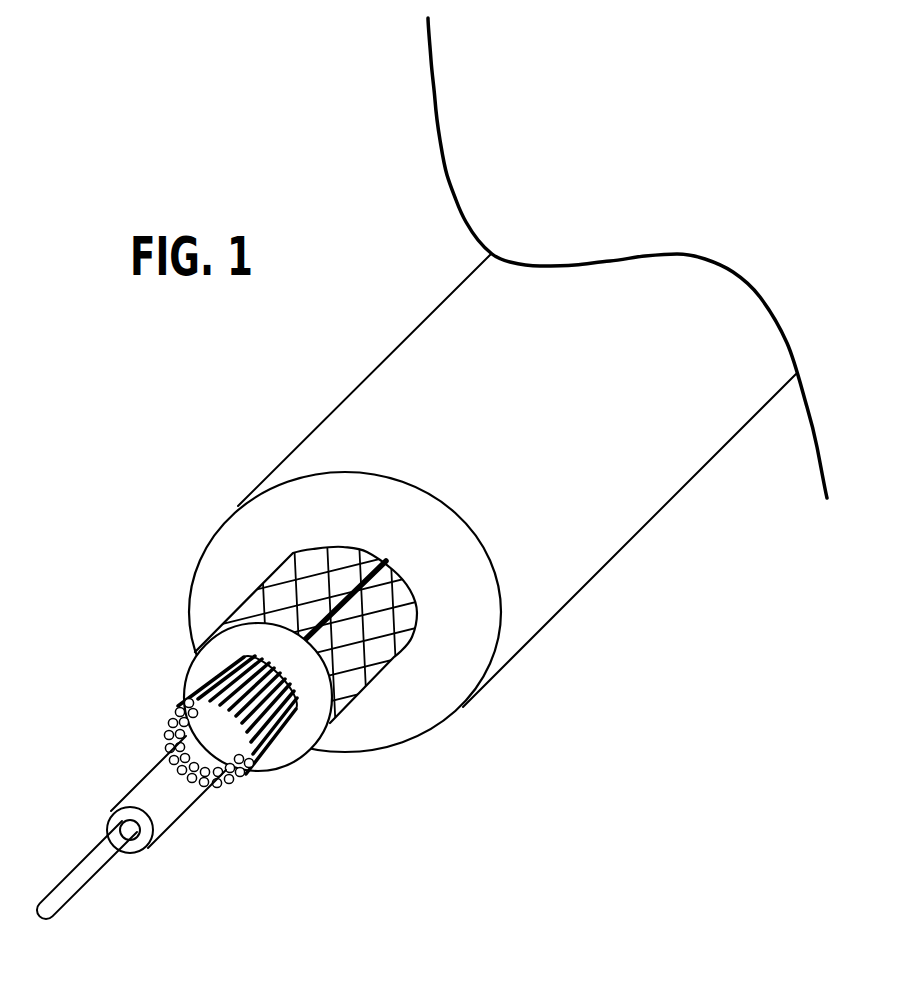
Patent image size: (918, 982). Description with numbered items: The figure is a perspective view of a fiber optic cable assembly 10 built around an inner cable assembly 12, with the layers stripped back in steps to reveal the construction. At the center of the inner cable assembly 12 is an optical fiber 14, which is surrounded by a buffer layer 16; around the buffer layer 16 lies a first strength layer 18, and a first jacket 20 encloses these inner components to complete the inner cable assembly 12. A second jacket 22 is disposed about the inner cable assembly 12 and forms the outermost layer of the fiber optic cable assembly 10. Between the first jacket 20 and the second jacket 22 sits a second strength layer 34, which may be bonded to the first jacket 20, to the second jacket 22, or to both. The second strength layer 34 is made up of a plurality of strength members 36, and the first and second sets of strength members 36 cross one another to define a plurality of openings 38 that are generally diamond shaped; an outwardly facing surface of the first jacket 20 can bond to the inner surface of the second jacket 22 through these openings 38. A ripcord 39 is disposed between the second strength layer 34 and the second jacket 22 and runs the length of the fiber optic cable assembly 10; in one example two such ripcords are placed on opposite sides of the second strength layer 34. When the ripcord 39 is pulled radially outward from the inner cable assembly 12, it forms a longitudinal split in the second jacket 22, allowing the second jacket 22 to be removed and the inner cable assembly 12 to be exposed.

The fiber optic cable assembly 10 is at (280, 337).
The inner cable assembly 12 is at (289, 778).
The optical fiber 14 is at (68, 903).
The buffer layer 16 is at (163, 825).
The first strength layer 18 is at (172, 716).
The first jacket 20 is at (195, 667).
The second jacket 22 is at (437, 716).
The second strength layer 34 is at (286, 598).
The strength members 36 is at (311, 572).
The openings 38 is at (375, 635).
The ripcord 39 is at (352, 586).